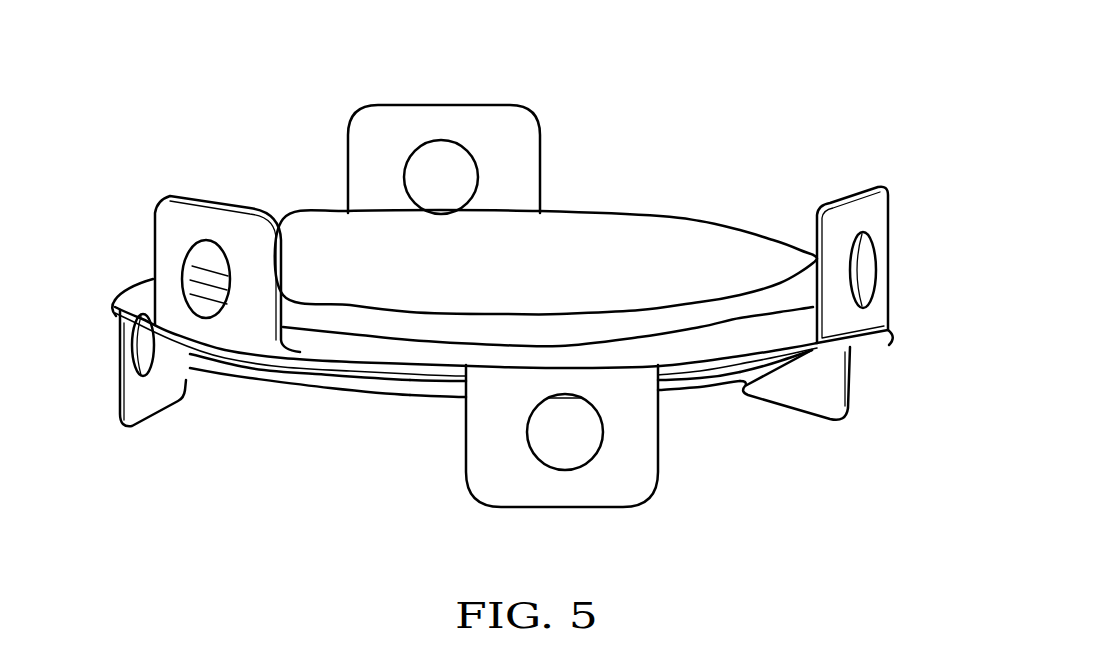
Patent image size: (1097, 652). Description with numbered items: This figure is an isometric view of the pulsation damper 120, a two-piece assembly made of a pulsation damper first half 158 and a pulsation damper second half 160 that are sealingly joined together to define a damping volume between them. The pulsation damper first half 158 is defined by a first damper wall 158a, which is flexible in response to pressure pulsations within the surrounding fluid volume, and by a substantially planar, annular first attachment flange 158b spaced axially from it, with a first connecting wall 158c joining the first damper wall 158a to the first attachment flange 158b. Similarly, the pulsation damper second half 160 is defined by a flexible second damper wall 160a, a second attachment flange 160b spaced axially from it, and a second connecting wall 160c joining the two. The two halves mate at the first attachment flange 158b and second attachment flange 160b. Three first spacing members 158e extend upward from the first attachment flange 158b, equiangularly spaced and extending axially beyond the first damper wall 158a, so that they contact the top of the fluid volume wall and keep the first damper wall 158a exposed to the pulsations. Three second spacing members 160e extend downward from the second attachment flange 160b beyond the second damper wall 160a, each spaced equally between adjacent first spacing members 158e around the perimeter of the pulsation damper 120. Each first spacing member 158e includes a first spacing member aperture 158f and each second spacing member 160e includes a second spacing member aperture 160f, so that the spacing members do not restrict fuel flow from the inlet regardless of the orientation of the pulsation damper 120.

The pulsation damper 120 is at (509, 300).
The pulsation damper first half 158 is at (509, 198).
The first damper wall 158a is at (552, 228).
The first attachment flange 158b is at (128, 292).
The first connecting wall 158c is at (718, 318).
The first spacing members 158e is at (168, 225).
The first spacing member aperture 158f is at (206, 265).
The pulsation damper second half 160 is at (485, 445).
The second damper wall 160a is at (287, 383).
The second attachment flange 160b is at (402, 372).
The second connecting wall 160c is at (695, 387).
The second spacing members 160e is at (136, 405).
The second spacing member aperture 160f is at (150, 355).